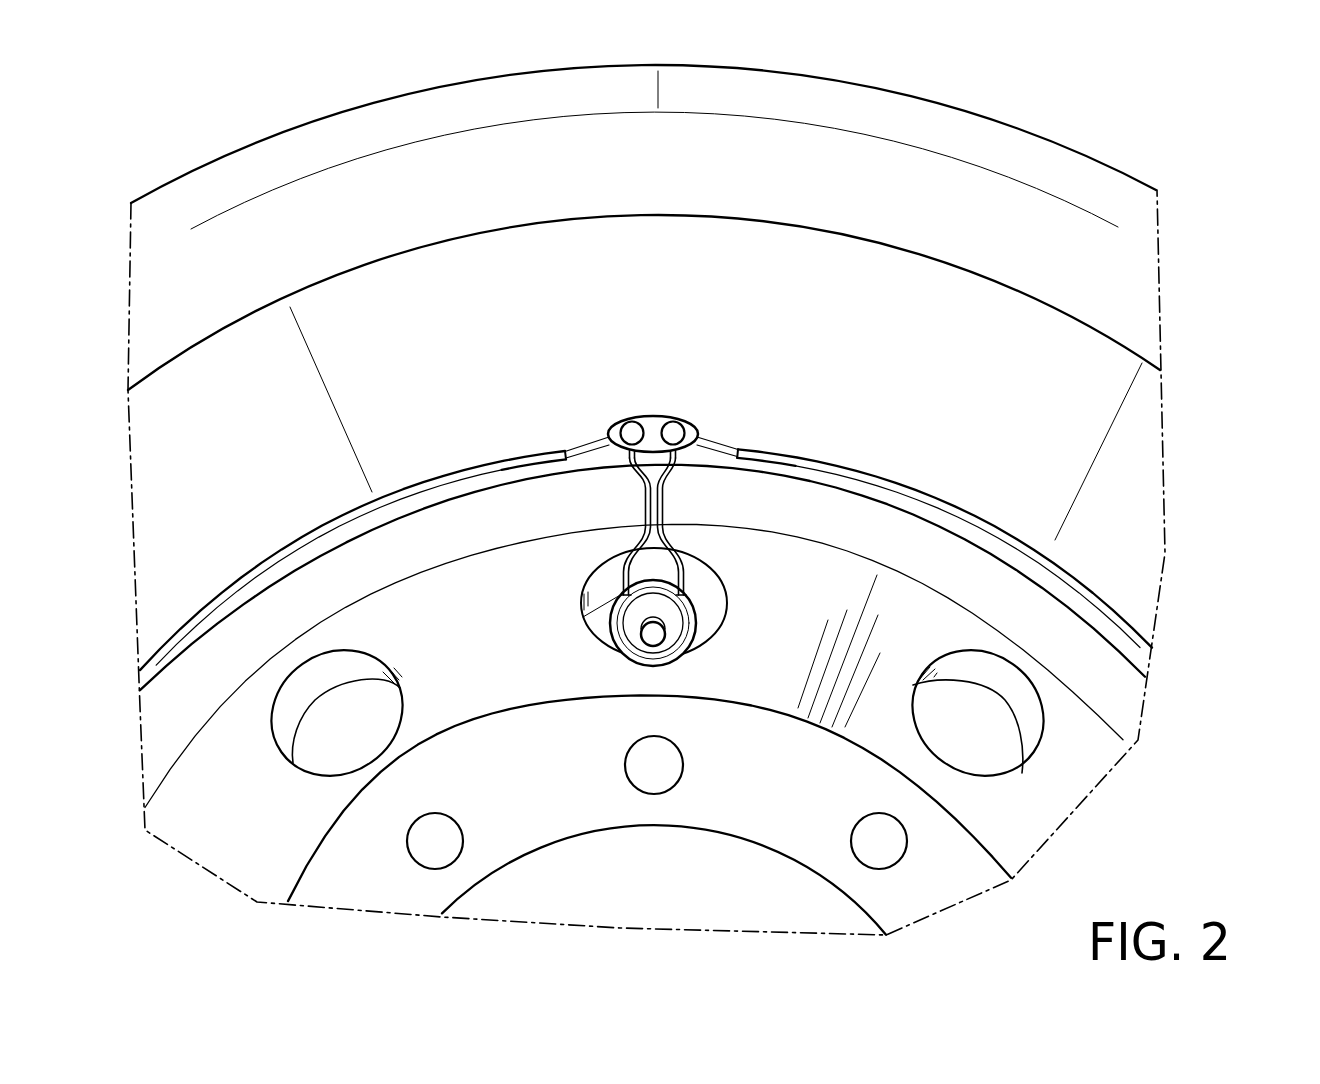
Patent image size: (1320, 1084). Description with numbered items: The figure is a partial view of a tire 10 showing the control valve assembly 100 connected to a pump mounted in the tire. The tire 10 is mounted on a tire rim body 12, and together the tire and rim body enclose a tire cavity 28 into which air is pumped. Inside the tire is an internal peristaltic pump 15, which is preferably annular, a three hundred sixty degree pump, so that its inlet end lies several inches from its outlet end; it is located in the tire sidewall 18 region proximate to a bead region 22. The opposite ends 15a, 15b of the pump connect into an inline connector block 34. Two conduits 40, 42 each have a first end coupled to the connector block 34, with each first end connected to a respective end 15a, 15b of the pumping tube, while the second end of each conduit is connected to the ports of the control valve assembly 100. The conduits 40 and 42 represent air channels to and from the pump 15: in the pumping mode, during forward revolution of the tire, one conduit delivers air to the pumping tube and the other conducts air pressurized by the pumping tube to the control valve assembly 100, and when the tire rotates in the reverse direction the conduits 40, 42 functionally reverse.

The tire 10 is at (1080, 150).
The tire rim body 12 is at (454, 697).
The peristaltic pump 15 is at (498, 463).
The pump end 15a is at (598, 444).
The pump end 15b is at (704, 441).
The tire sidewall 18 is at (207, 457).
The bead region 22 is at (404, 557).
The tire cavity 28 is at (1150, 473).
The inline connector block 34 is at (655, 416).
The conduit 40 is at (645, 525).
The conduit 42 is at (661, 525).
The control valve assembly 100 is at (691, 616).